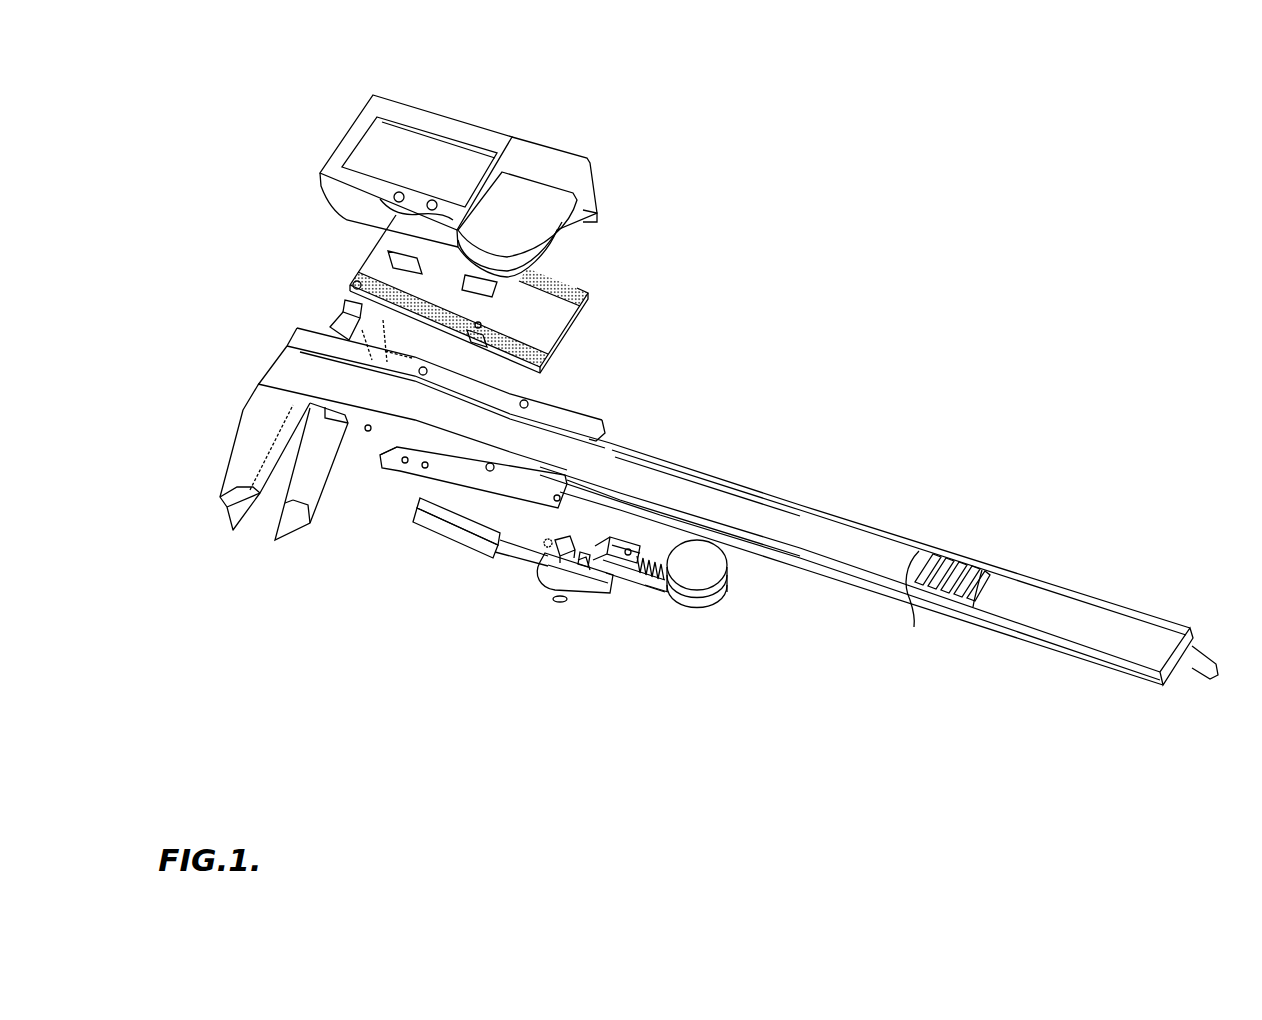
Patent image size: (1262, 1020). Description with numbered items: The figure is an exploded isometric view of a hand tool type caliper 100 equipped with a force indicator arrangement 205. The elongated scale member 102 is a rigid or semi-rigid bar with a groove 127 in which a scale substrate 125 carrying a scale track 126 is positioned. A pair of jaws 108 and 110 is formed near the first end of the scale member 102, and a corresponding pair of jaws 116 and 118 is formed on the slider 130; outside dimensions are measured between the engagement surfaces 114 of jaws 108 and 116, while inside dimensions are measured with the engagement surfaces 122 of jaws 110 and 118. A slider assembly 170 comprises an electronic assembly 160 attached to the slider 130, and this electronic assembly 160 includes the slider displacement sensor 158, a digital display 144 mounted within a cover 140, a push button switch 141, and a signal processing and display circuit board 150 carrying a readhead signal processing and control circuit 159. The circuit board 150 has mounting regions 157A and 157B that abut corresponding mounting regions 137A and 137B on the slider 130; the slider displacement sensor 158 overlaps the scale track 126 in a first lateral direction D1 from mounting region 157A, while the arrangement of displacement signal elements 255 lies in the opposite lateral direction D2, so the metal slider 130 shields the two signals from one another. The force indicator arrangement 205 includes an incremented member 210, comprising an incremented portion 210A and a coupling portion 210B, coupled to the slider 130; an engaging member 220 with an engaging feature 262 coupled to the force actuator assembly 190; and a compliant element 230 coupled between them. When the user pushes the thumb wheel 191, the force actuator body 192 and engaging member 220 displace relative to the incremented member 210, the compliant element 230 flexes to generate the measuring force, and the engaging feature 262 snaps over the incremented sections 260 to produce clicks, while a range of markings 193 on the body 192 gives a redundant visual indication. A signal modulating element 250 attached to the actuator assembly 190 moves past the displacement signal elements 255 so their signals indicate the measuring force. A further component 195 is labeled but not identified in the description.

The caliper 100 is at (993, 148).
The scale member 102 is at (1196, 648).
The jaw 108 is at (240, 468).
The jaw 110 is at (350, 328).
The engagement surfaces 114 is at (283, 497).
The jaw 116 is at (320, 497).
The jaw 118 is at (372, 330).
The engagement surfaces 122 is at (340, 328).
The scale substrate 125 is at (954, 608).
The scale track 126 is at (977, 599).
The groove 127 is at (1098, 640).
The slider 130 is at (570, 416).
The mounting region 137A is at (683, 506).
The mounting region 137B is at (707, 471).
The cover 140 is at (436, 180).
The push button switch 141 is at (450, 214).
The digital display 144 is at (488, 137).
The signal processing and display circuit board 150 is at (446, 301).
The mounting region 157A is at (560, 346).
The mounting region 157B is at (591, 302).
The slider displacement sensor 158 is at (490, 294).
The readhead signal processing and control circuit 159 is at (415, 268).
The electronic assembly 160 is at (597, 404).
The slider assembly 170 is at (650, 423).
The force actuator assembly 190 is at (709, 608).
The thumb wheel 191 is at (720, 590).
The force actuator body 192 is at (652, 593).
The range of markings 193 is at (646, 566).
The drive mechanism 195 is at (608, 495).
The force indicator arrangement 205 is at (653, 630).
The incremented member 210 is at (467, 548).
The incremented portion 210A is at (553, 561).
The coupling portion 210B is at (527, 555).
The engaging member 220 is at (599, 547).
The compliant element 230 is at (590, 580).
The signal modulating element 250 is at (561, 538).
The arrangement of displacement signal elements 255 is at (483, 340).
The incremented sections 260 is at (581, 568).
The engaging feature 262 is at (586, 546).
The first lateral direction D1 is at (580, 340).
The opposite lateral direction D2 is at (553, 375).